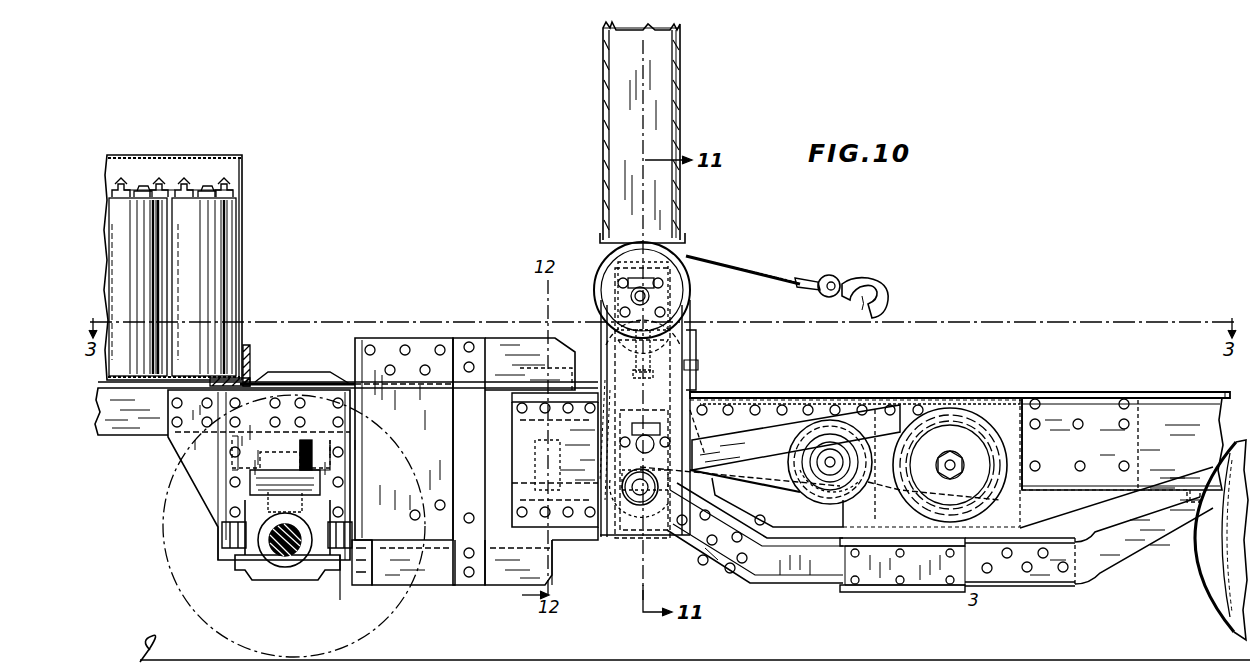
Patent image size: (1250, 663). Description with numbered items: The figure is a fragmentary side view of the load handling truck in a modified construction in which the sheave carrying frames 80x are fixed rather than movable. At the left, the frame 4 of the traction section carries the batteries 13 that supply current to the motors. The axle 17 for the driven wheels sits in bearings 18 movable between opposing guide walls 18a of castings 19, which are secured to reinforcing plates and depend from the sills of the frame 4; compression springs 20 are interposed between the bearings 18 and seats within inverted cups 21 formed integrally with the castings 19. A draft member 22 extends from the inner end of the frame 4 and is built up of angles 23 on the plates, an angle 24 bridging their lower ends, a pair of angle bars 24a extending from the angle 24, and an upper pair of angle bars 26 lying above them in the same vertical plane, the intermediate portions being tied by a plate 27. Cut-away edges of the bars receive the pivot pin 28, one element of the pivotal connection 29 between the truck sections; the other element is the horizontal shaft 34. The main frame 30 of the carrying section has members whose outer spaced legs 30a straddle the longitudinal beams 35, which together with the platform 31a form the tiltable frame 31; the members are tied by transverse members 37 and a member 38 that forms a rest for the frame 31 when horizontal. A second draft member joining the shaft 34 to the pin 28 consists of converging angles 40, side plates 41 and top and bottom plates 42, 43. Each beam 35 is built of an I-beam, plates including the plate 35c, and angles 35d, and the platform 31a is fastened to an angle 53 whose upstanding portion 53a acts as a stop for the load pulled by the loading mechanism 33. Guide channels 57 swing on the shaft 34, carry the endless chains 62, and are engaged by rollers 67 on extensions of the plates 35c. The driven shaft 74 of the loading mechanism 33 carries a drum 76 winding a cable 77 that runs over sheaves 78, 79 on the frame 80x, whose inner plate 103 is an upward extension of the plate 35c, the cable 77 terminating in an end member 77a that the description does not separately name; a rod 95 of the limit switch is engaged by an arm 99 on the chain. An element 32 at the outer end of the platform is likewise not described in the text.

The frame 4 is at (140, 430).
The batteries 13 is at (225, 225).
The axle 17 is at (290, 545).
The bearings 18 is at (252, 516).
The guide walls 18a is at (330, 502).
The castings 19 is at (233, 466).
The compression springs 20 is at (278, 480).
The inverted cups 21 is at (393, 472).
The draft member 22 is at (514, 575).
The angles 23 is at (341, 575).
The angle 24 is at (355, 583).
The angle bars 24a is at (433, 578).
The angle bars 26 is at (497, 348).
The plate 27 is at (388, 348).
The pivot pin 28 is at (540, 450).
The pivotal connection 29 is at (598, 527).
The main frame 30 is at (845, 552).
The spaced legs 30a is at (1158, 532).
The swingable frame 31 is at (1145, 440).
The platform 31a is at (1182, 392).
The bumper 32 is at (1220, 605).
The loading mechanism 33 is at (826, 504).
The shaft 34 is at (640, 500).
The longitudinal beams 35 is at (1150, 400).
The plate 35c is at (903, 415).
The angles 35d is at (796, 437).
The transverse members 37 is at (700, 556).
The transverse member 38 is at (940, 535).
The converging angles 40 is at (518, 524).
The side plates 41 is at (518, 484).
The top plate 42 is at (575, 372).
The bottom plate 43 is at (571, 570).
The angle 53 is at (750, 378).
The up-standing portion 53a is at (696, 352).
The channel members 57 is at (640, 126).
The endless chains 62 is at (678, 118).
The roller 67 is at (698, 368).
The driven shaft 74 is at (960, 458).
The drum 76 is at (955, 430).
The cables 77 is at (737, 272).
The hook 77a is at (877, 285).
The reeving element 78 is at (698, 420).
The reeving element 79 is at (690, 284).
The sheave carrying frames 80x is at (688, 312).
The rod 95 is at (622, 29).
The arm 99 is at (636, 370).
The inner plate 103 is at (538, 354).